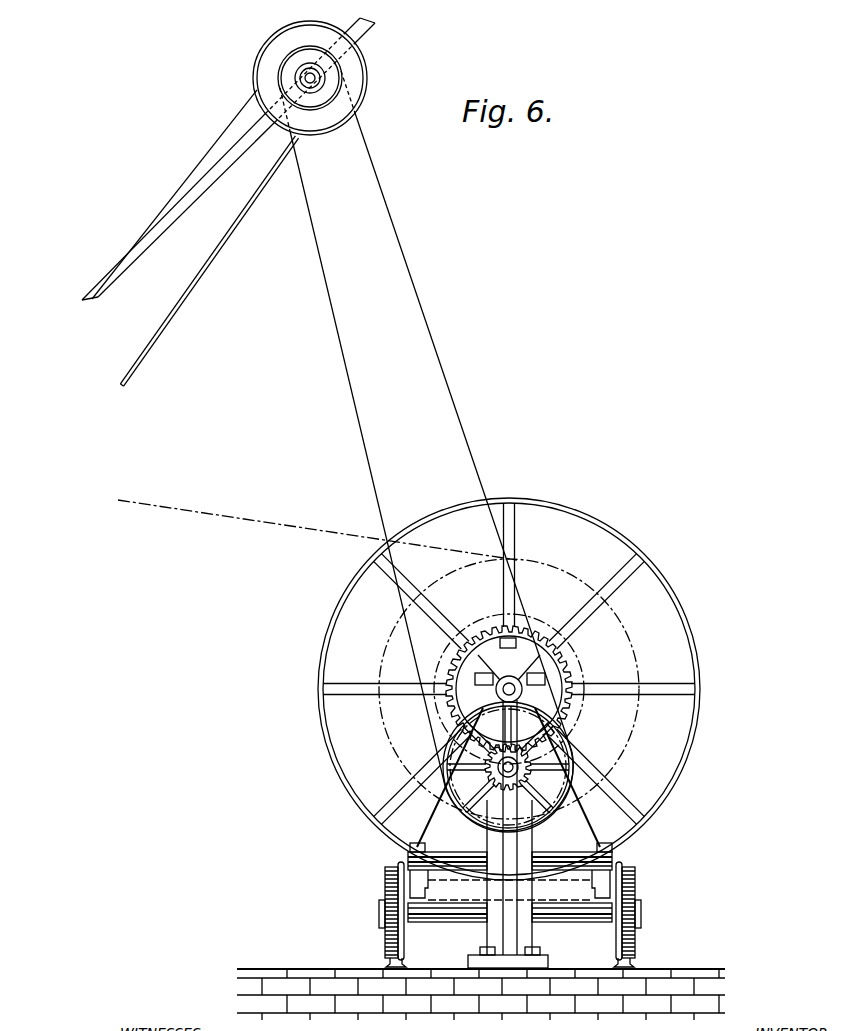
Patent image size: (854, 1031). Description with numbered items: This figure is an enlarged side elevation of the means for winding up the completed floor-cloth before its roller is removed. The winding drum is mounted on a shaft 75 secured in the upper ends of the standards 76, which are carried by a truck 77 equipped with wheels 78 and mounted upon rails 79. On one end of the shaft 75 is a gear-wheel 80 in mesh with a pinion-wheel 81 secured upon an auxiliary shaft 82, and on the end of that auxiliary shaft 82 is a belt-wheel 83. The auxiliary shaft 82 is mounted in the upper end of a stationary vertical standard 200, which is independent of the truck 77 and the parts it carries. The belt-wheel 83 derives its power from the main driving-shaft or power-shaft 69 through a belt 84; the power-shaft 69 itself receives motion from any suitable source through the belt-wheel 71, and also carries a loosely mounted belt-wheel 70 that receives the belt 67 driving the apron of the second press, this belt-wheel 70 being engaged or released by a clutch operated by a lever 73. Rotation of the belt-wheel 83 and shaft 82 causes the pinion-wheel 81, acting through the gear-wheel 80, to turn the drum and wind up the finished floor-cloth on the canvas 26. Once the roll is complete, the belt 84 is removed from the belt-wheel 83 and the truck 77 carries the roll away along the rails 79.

The canvas 26 is at (317, 528).
The belt 67 is at (209, 261).
The power-shaft 69 is at (326, 77).
The belt-wheel 70 is at (338, 63).
The belt-wheel 71 is at (256, 64).
The lever 73 is at (97, 292).
The shaft 75 is at (562, 657).
The standards 76 is at (576, 851).
The truck 77 is at (484, 882).
The wheels 78 is at (384, 937).
The rails 79 is at (402, 965).
The gear-wheel 80 is at (460, 653).
The pinion-wheel 81 is at (567, 777).
The auxiliary shaft 82 is at (492, 781).
The belt-wheel 83 is at (566, 779).
The belt 84 is at (426, 451).
The stationary vertical standard 200 is at (523, 948).